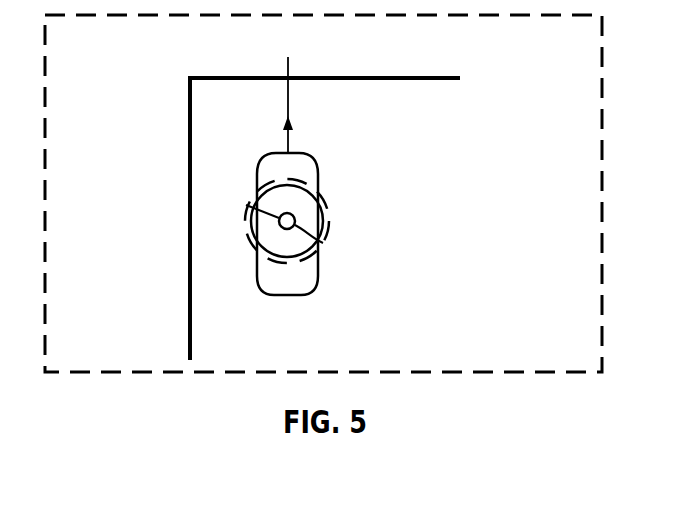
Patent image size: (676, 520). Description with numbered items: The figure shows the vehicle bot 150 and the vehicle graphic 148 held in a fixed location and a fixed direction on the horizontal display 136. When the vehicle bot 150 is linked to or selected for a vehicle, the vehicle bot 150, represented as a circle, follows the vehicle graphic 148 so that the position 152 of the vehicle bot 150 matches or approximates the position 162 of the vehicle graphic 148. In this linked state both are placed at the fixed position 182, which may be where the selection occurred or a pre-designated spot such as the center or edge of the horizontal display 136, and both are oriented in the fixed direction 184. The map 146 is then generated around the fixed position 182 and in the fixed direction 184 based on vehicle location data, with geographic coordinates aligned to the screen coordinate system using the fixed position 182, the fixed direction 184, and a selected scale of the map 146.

The horizontal display 136 is at (574, 64).
The map 146 is at (190, 60).
The vehicle graphic 148 is at (295, 295).
The vehicle bot 150 is at (328, 226).
The position of the vehicle bot 152 is at (246, 205).
The position of the vehicle graphic 162 is at (323, 243).
The fixed position 182 is at (326, 208).
The fixed direction 184 is at (288, 140).